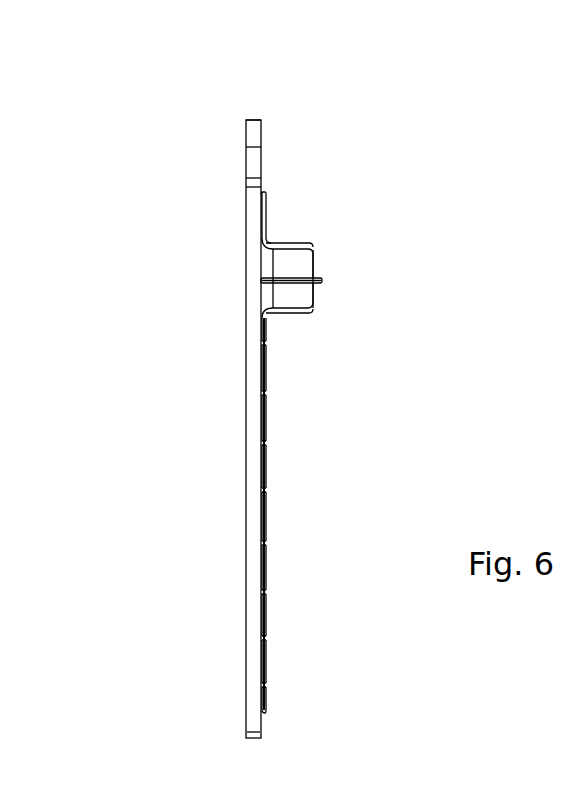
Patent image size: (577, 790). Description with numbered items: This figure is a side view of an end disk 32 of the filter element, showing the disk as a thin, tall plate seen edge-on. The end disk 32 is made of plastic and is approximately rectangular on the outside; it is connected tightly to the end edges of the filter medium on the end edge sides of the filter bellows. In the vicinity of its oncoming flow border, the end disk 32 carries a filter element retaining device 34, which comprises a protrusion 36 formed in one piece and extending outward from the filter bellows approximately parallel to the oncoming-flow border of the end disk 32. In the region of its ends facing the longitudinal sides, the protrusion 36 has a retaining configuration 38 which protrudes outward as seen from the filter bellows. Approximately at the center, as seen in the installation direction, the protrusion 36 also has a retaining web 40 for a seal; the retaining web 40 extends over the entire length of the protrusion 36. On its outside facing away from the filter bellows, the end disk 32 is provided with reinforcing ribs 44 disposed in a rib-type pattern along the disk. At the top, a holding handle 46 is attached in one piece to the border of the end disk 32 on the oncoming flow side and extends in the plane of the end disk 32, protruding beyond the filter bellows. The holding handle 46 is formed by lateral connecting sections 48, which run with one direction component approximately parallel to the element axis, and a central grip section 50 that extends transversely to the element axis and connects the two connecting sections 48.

The end disk 32 is at (122, 94).
The filter element retaining device 34 is at (310, 232).
The protrusion 36 is at (310, 302).
The retaining configuration 38 is at (300, 263).
The retaining web 40 is at (322, 281).
The reinforcing ribs 44 is at (264, 692).
The holding handle 46 is at (273, 140).
The connecting sections 48 is at (253, 160).
The central grip section 50 is at (256, 122).